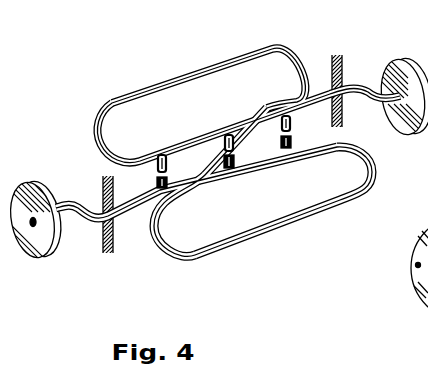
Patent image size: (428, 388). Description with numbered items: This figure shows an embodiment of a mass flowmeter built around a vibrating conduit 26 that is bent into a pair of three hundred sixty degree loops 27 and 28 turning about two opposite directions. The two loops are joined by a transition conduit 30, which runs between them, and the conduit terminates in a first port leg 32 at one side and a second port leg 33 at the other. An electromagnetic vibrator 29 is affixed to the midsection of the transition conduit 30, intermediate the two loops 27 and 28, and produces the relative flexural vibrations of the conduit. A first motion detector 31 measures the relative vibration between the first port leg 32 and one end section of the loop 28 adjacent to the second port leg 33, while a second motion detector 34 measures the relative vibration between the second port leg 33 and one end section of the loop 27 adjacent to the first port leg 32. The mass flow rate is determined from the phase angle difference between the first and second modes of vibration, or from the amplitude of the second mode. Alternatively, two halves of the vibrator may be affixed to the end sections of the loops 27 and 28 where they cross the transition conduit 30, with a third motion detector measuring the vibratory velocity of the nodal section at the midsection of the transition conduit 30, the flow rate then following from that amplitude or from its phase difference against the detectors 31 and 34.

The conduit 26 is at (152, 148).
The three hundred sixty degree loop 27 is at (214, 60).
The three hundred sixty degree loop 28 is at (292, 228).
The electromagnetic vibrator 29 is at (250, 168).
The transition conduit 30 is at (176, 257).
The first motion detector 31 is at (297, 133).
The first port leg 32 is at (329, 84).
The second port leg 33 is at (142, 162).
The second motion detector 34 is at (174, 168).